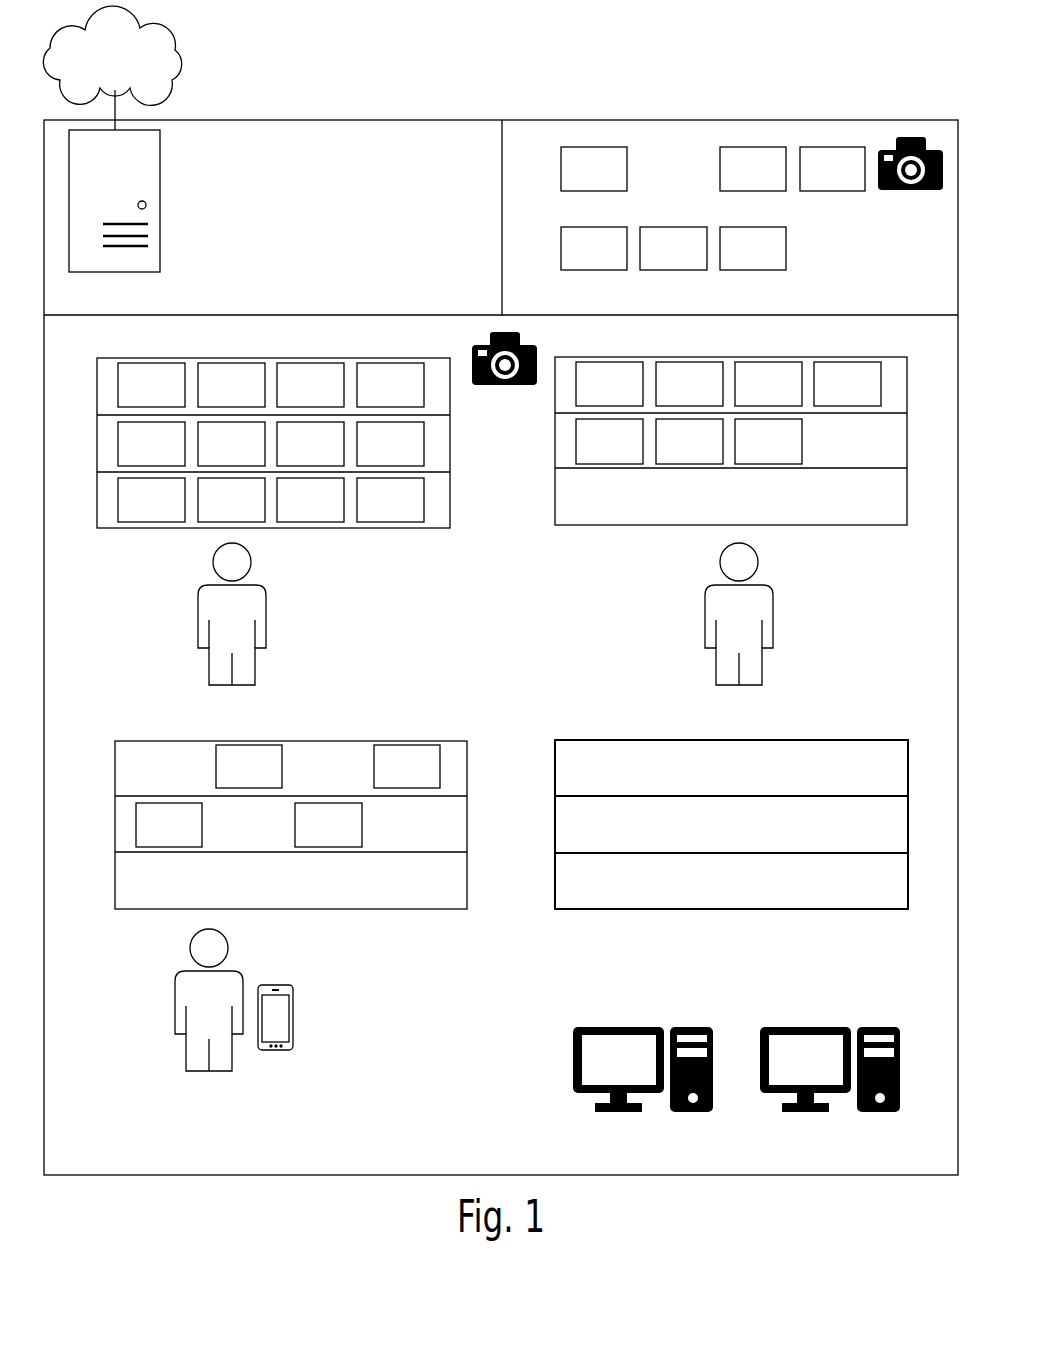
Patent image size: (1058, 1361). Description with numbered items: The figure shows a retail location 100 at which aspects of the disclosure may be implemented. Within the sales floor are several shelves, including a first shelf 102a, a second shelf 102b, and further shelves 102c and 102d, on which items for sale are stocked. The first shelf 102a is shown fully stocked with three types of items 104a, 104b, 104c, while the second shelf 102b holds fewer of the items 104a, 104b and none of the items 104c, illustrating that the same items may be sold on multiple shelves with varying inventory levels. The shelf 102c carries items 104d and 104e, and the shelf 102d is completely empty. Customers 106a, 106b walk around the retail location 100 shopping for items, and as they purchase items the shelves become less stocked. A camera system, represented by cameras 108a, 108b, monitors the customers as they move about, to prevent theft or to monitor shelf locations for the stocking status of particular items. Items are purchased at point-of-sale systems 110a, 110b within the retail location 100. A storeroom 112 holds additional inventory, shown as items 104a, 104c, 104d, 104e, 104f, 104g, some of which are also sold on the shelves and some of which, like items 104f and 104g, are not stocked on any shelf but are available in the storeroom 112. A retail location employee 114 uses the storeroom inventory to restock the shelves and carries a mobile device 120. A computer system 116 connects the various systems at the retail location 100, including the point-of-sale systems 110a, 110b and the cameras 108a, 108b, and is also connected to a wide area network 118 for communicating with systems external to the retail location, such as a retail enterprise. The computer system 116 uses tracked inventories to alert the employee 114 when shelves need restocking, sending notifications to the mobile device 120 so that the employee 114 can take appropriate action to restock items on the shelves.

The retail location 100 is at (581, 74).
The first shelf 102a is at (365, 558).
The second shelf 102b is at (804, 557).
The shelf 102c is at (367, 944).
The shelf 102d is at (601, 717).
The item 104a is at (616, 180).
The item 104b is at (173, 455).
The item 104c is at (775, 180).
The item 104d is at (854, 180).
The item 104e is at (616, 260).
The item 104f is at (694, 260).
The item 104g is at (775, 260).
The customer 106a is at (290, 648).
The customer 106b is at (805, 649).
The camera system 108a is at (493, 408).
The camera system 108b is at (901, 217).
The point-of-sale system 110a is at (627, 996).
The point-of-sale system 110b is at (805, 997).
The storeroom 112 is at (556, 302).
The retail location employee 114 is at (148, 1071).
The computer system 116 is at (190, 166).
The wide area network 118 is at (215, 55).
The mobile device 120 is at (283, 1075).